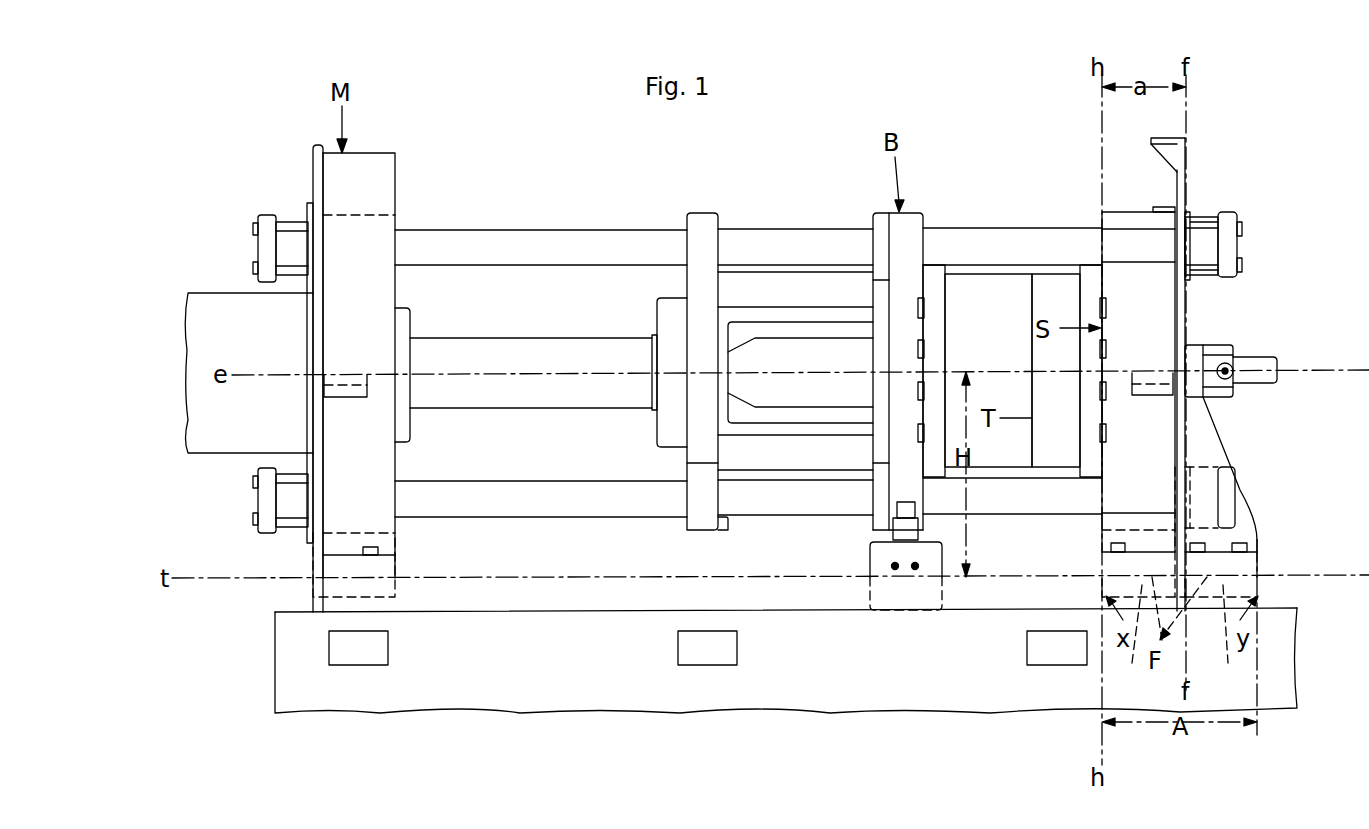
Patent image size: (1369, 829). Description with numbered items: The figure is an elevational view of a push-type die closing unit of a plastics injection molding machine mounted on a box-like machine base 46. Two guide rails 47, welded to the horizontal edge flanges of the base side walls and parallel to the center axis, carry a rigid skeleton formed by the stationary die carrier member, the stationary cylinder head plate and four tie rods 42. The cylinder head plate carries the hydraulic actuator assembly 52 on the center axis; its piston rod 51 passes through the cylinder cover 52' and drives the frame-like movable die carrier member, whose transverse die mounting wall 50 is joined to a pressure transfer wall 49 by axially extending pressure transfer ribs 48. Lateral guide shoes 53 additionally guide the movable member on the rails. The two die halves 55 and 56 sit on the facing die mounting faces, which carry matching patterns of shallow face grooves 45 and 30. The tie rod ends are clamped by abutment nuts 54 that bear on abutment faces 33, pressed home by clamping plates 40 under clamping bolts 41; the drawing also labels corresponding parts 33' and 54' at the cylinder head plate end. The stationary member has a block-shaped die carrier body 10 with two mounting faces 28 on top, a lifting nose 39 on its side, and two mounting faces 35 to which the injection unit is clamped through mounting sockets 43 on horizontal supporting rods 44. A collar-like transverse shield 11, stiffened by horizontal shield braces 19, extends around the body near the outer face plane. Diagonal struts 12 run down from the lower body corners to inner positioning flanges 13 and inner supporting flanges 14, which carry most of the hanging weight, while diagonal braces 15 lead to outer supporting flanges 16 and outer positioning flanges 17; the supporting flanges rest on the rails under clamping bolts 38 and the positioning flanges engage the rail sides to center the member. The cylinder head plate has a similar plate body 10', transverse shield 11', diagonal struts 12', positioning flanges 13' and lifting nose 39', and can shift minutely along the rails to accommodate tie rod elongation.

The die carrier body 10 is at (1107, 382).
The plate body 10' is at (386, 365).
The transverse shield 11 is at (1215, 364).
The transverse shield 11' is at (269, 373).
The diagonal struts 12 is at (1125, 541).
The diagonal struts 12' is at (384, 565).
The inner positioning flanges 13 is at (1143, 637).
The vertical positioning flanges 13' is at (282, 625).
The inner supporting flanges 14 is at (342, 568).
The diagonal braces 15 is at (1225, 535).
The outer supporting flanges 16 is at (1236, 566).
The outer positioning flanges 17 is at (1221, 641).
The horizontal shield braces 19 is at (1120, 268).
The mounting faces 28 is at (1127, 212).
The face grooves 30 is at (1105, 361).
The abutment faces 33 is at (1251, 246).
The washer plate 33' is at (276, 358).
The mounting faces 35 is at (1188, 349).
The clamping bolts 38 is at (1246, 545).
The lifting nose 39 is at (1145, 360).
The lifting nose 39' is at (347, 360).
The clamping plates 40 is at (1228, 236).
The clamping bolts 41 is at (283, 224).
The tie rods 42 is at (531, 250).
The mounting sockets 43 is at (1214, 358).
The horizontal supporting rods 44 is at (1258, 366).
The face grooves 45 is at (920, 310).
The machine base 46 is at (945, 676).
The guide rails 47 is at (543, 593).
The pressure transfer ribs 48 is at (740, 352).
The pressure transfer wall 49 is at (700, 430).
The die mounting wall 50 is at (905, 287).
The piston rod 51 is at (508, 387).
The hydraulic actuator assembly 52 is at (245, 403).
The cylinder cover 52' is at (431, 368).
The guide shoes 53 is at (870, 561).
The abutment nuts 54 is at (1212, 270).
The bolt shank 54' is at (253, 374).
The die half 55 is at (1012, 367).
The die half 56 is at (1079, 367).